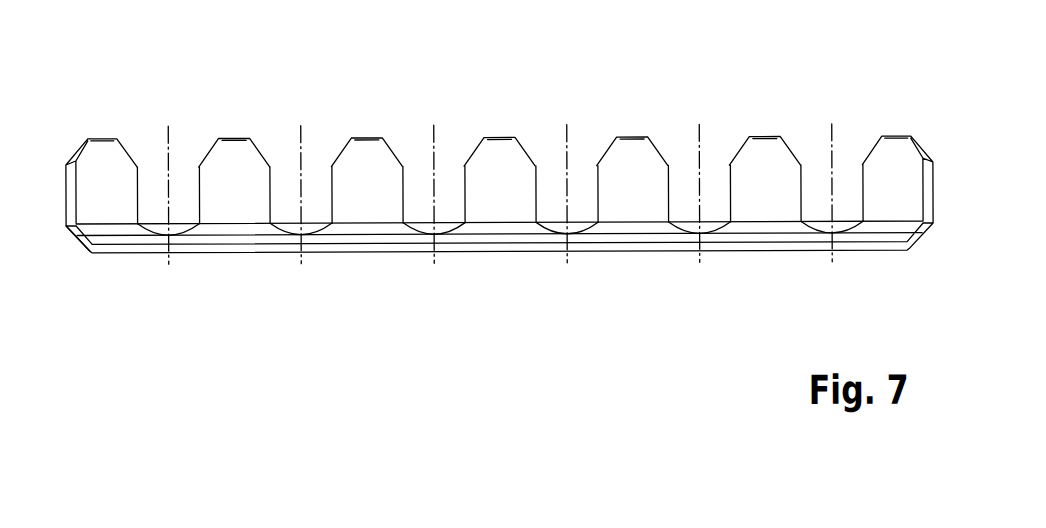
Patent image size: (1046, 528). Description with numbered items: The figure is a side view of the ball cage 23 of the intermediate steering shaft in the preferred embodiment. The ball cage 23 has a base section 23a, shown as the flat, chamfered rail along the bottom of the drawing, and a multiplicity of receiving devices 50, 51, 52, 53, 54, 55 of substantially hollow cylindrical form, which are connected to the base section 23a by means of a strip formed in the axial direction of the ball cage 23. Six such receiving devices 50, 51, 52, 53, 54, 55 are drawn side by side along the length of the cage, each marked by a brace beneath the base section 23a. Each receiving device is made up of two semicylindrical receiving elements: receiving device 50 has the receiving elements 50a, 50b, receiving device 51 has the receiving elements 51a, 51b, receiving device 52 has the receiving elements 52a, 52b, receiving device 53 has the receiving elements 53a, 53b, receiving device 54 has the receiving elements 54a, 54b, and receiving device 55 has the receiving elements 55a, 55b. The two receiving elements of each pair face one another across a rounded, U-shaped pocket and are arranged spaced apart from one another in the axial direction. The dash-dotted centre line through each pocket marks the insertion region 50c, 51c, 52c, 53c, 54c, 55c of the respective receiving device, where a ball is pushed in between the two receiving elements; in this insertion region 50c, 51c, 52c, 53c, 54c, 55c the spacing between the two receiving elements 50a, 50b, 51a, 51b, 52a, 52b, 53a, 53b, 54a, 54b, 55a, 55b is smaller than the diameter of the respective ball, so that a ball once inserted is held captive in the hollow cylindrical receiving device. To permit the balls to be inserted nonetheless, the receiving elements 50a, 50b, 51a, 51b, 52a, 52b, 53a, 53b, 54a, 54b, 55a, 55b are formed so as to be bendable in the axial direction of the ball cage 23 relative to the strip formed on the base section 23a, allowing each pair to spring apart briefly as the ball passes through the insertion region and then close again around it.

The ball cage 23 is at (497, 306).
The base section 23a is at (86, 250).
The receiving device 50 is at (234, 263).
The semicylindrical receiving element 50a is at (138, 168).
The semicylindrical receiving element 50b is at (198, 167).
The insertion region 50c is at (174, 160).
The receiving device 51 is at (367, 263).
The semicylindrical receiving element 51a is at (271, 168).
The semicylindrical receiving element 51b is at (331, 167).
The insertion region 51c is at (307, 160).
The receiving device 52 is at (500, 263).
The semicylindrical receiving element 52a is at (404, 168).
The semicylindrical receiving element 52b is at (464, 167).
The insertion region 52c is at (440, 160).
The receiving device 53 is at (633, 263).
The semicylindrical receiving element 53a is at (537, 168).
The semicylindrical receiving element 53b is at (597, 167).
The insertion region 53c is at (573, 160).
The receiving device 54 is at (766, 263).
The semicylindrical receiving element 54a is at (670, 168).
The semicylindrical receiving element 54b is at (730, 167).
The insertion region 54c is at (706, 160).
The receiving device 55 is at (898, 263).
The semicylindrical receiving element 55a is at (802, 168).
The semicylindrical receiving element 55b is at (862, 167).
The insertion region 55c is at (838, 160).